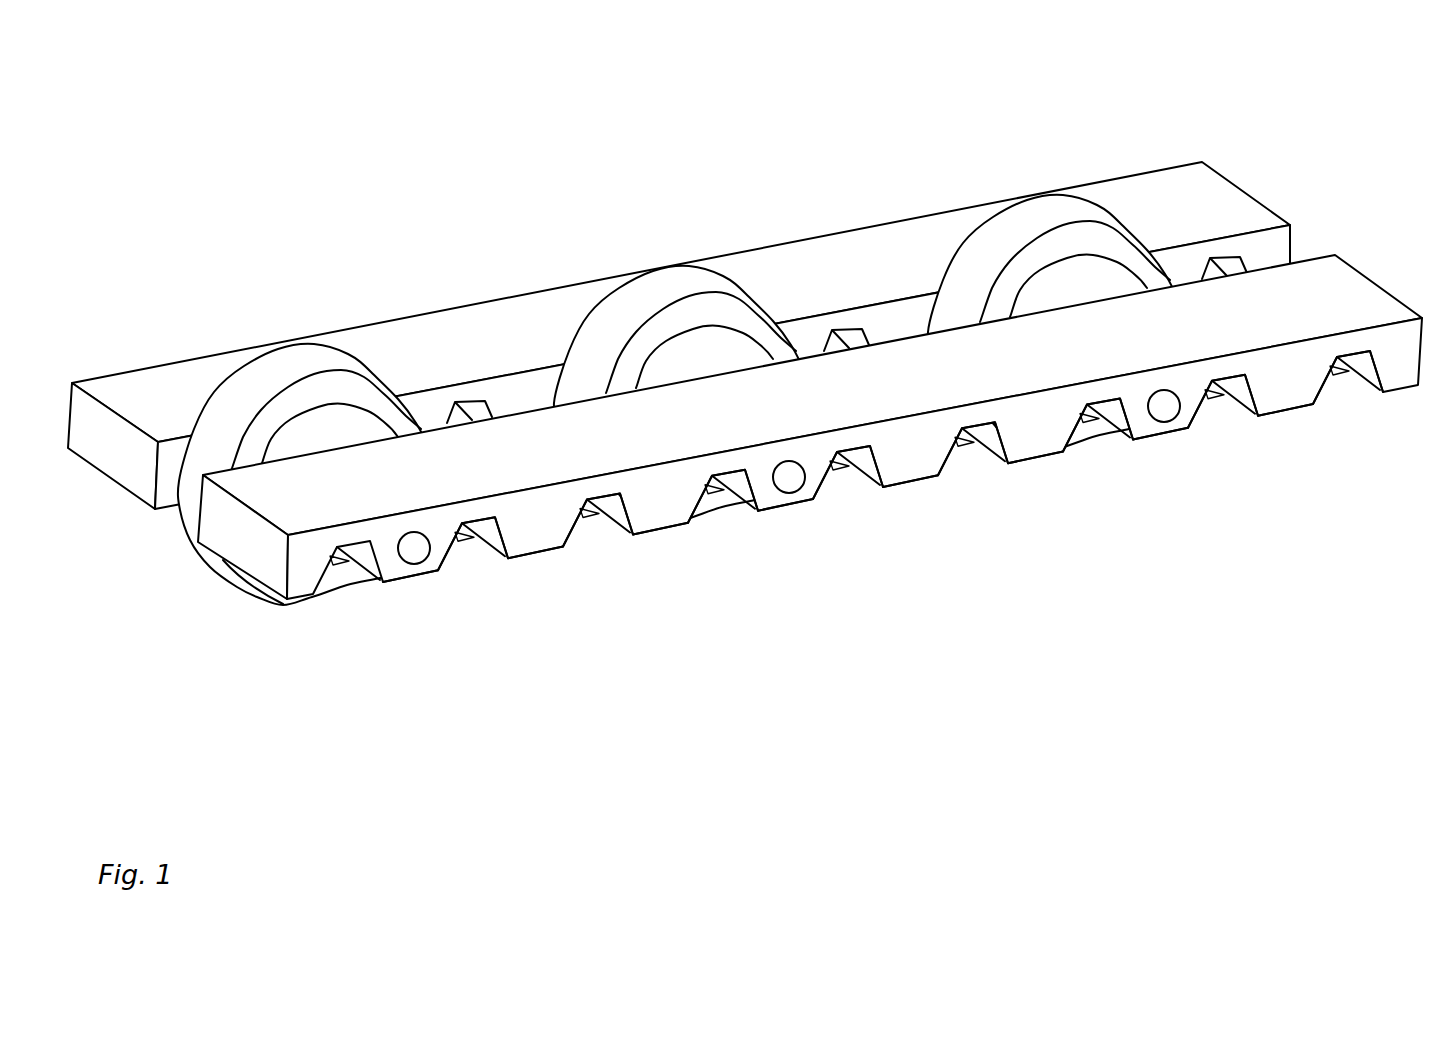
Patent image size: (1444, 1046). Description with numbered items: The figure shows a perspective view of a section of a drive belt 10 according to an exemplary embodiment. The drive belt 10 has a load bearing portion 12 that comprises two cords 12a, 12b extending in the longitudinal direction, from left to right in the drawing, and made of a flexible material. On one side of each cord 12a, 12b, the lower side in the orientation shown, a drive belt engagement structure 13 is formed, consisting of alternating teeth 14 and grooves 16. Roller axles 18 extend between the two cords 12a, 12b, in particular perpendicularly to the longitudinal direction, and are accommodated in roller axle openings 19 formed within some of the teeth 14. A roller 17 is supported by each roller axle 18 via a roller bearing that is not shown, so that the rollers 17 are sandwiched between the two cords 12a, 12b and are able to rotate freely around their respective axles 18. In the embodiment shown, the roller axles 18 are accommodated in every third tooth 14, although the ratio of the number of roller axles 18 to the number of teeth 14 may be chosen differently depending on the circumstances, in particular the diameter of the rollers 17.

The drive belt 10 is at (750, 381).
The load bearing portion 12 is at (750, 410).
The cord 12a is at (1157, 183).
The cord 12b is at (1358, 290).
The drive belt engagement structure 13 is at (856, 537).
The teeth 14 is at (428, 575).
The grooves 16 is at (480, 584).
The roller 17 is at (293, 353).
The roller axles 18 is at (405, 564).
The roller axle openings 19 is at (441, 521).